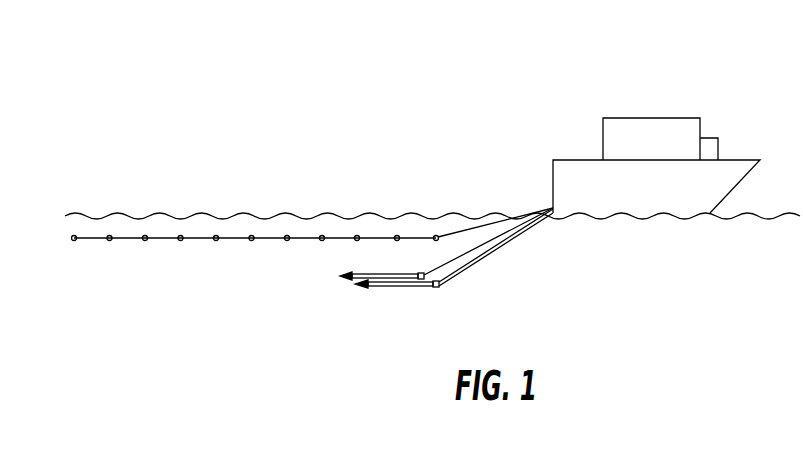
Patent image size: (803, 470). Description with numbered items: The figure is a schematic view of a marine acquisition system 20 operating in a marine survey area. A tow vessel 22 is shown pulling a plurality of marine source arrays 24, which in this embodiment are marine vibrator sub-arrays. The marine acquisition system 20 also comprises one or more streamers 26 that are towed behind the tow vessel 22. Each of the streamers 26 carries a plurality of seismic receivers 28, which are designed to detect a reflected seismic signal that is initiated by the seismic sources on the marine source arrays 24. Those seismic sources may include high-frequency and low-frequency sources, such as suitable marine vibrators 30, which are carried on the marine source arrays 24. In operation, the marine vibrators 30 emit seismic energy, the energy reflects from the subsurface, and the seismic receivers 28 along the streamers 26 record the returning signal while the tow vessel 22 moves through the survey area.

The marine acquisition system 20 is at (556, 60).
The tow vessel 22 is at (740, 160).
The marine source arrays 24 is at (356, 284).
The streamers 26 is at (189, 245).
The seismic receivers 28 is at (287, 233).
The marine vibrators 30 is at (408, 281).